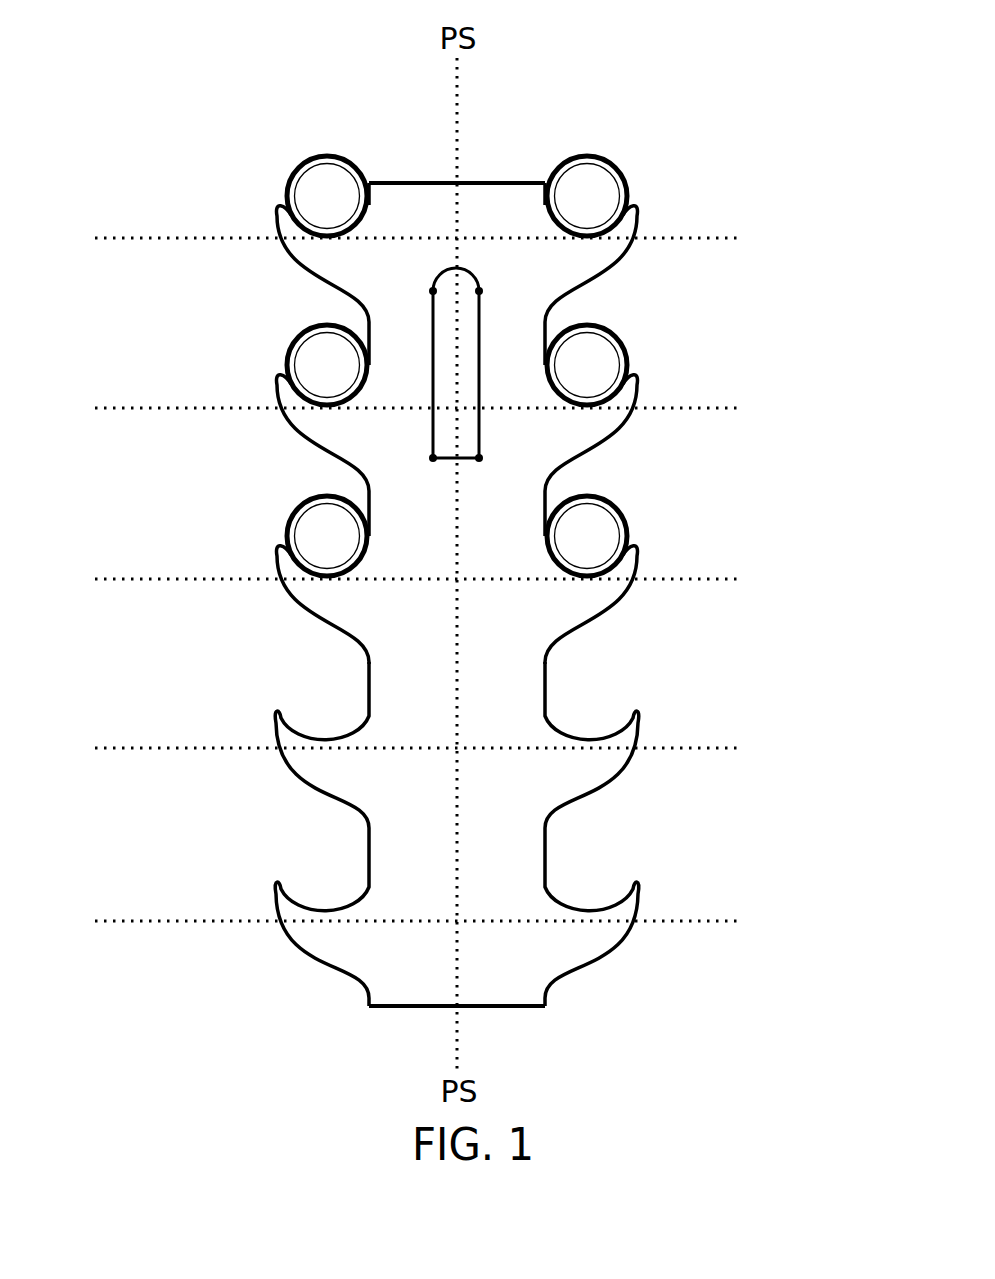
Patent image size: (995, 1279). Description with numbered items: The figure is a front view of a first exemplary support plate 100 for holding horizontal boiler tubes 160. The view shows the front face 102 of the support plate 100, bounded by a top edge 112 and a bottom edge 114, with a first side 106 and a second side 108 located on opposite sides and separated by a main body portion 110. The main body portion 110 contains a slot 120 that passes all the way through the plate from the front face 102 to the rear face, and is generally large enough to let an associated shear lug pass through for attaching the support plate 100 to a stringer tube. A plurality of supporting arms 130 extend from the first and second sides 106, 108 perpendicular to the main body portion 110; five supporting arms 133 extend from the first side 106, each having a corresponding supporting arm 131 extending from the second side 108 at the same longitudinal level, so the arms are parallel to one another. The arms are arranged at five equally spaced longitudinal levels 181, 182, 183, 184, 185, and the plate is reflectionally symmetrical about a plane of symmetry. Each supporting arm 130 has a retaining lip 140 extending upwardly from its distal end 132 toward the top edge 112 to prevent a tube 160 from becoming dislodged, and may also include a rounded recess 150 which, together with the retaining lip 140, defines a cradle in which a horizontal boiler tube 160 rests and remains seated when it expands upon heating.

The support plate 100 is at (643, 139).
The front face 102 is at (476, 596).
The first side 106 is at (368, 425).
The second side 108 is at (550, 262).
The main body portion 110 is at (448, 553).
The top edge 112 is at (410, 180).
The bottom edge 114 is at (493, 1010).
The slot 120 is at (457, 393).
The supporting arm 130 is at (327, 777).
The corresponding supporting arm 131 is at (613, 250).
The distal end 132 is at (297, 752).
The supporting arm 133 is at (290, 248).
The retaining lip 140 is at (283, 713).
The rounded recess 150 is at (320, 921).
The horizontal boiler tube 160 is at (300, 160).
The longitudinal level 181 is at (392, 240).
The longitudinal level 182 is at (392, 410).
The longitudinal level 183 is at (392, 581).
The longitudinal level 184 is at (392, 750).
The longitudinal level 185 is at (392, 923).